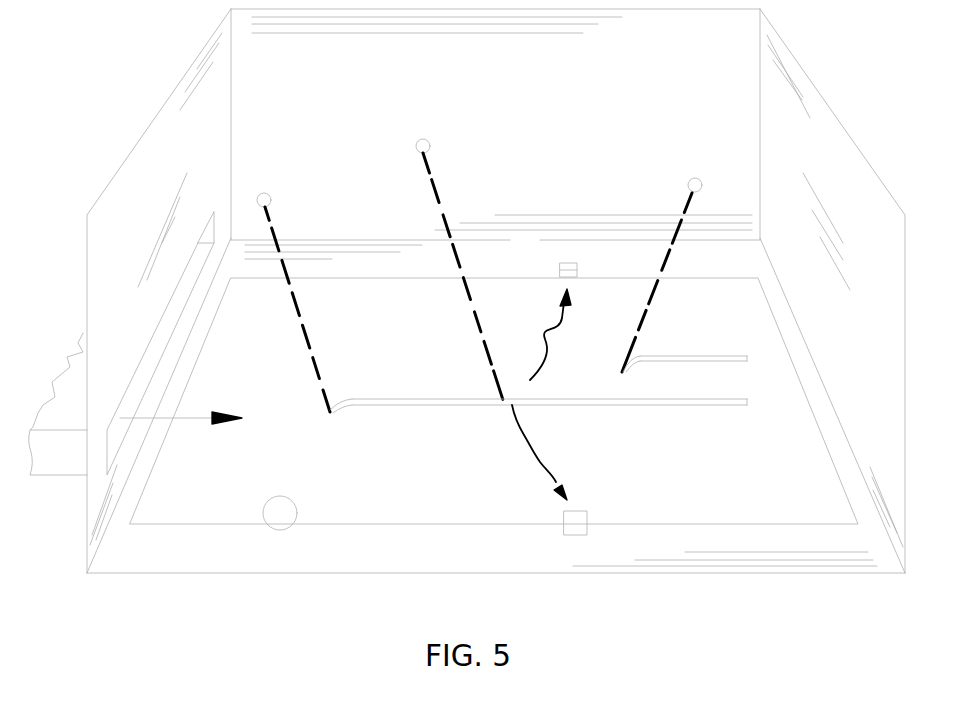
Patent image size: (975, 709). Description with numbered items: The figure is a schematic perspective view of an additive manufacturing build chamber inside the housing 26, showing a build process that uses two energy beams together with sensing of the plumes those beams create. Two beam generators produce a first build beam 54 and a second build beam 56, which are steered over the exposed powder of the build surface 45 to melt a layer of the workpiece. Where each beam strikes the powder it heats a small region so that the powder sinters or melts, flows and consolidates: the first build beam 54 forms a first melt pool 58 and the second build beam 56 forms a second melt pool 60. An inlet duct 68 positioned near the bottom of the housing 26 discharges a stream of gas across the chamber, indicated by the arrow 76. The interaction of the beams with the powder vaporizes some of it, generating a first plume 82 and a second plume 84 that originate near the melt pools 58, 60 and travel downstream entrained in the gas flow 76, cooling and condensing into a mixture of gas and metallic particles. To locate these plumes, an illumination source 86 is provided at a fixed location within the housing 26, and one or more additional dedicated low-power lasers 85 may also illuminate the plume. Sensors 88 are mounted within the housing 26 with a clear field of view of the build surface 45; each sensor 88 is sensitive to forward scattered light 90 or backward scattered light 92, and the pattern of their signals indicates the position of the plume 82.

The housing 26 is at (838, 147).
The build surface 45 is at (831, 516).
The first build beam 54 is at (274, 229).
The second build beam 56 is at (687, 197).
The first melt pool 58 is at (331, 412).
The second melt pool 60 is at (623, 371).
The inlet duct 68 is at (73, 471).
The gas flow 76 is at (197, 417).
The first plume 82 is at (352, 398).
The second plume 84 is at (665, 357).
The dedicated low-power laser 85 is at (433, 178).
The illumination source 86 is at (277, 525).
The sensor 88 is at (560, 265).
The forward scattered light 90 is at (561, 327).
The backward scattered light 92 is at (557, 470).